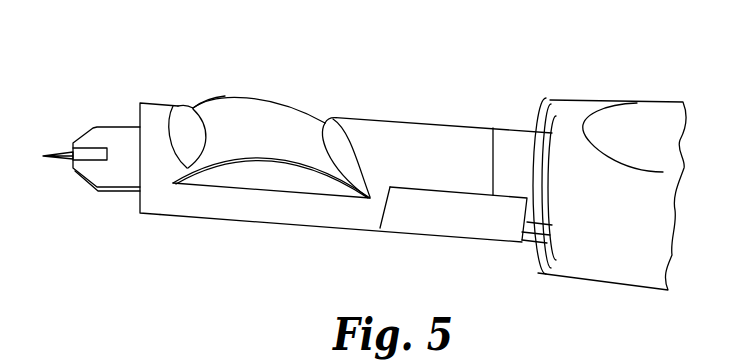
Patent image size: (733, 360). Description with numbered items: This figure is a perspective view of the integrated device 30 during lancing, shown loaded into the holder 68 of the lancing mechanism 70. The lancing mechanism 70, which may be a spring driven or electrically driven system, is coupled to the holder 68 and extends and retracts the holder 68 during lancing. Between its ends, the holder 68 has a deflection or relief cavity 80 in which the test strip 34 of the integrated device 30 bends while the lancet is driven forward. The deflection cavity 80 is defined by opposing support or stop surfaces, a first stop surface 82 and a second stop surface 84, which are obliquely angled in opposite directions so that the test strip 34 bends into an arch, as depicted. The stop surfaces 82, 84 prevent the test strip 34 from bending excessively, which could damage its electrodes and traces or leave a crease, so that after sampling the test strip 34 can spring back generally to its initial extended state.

The integrated device 30 is at (247, 97).
The test strip 34 is at (282, 127).
The holder 68 is at (376, 150).
The lancing mechanism 70 is at (588, 127).
The deflection cavity 80 is at (210, 101).
The first stop surface 82 is at (173, 106).
The second stop surface 84 is at (343, 160).